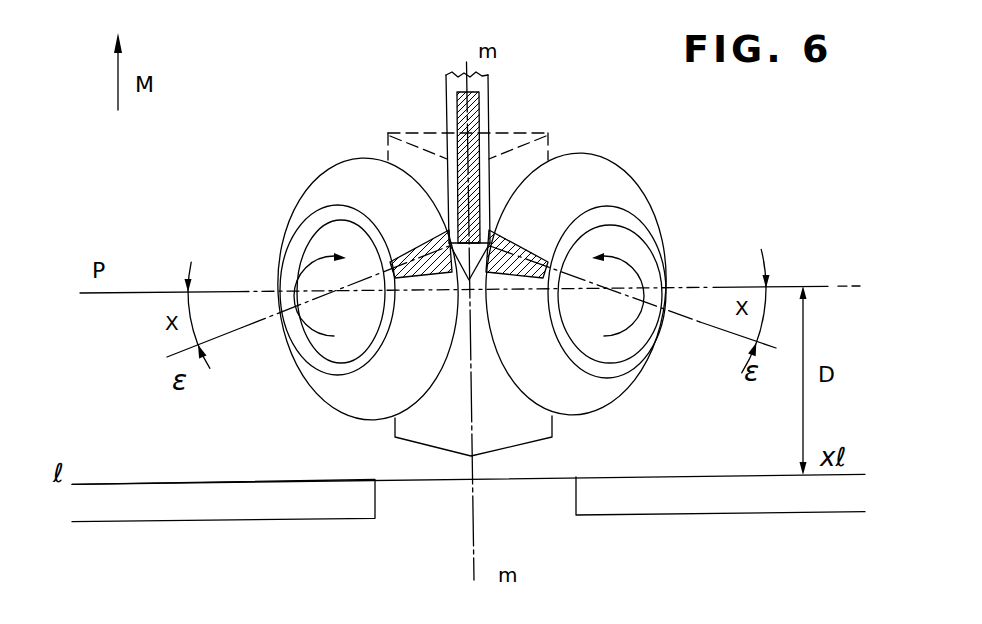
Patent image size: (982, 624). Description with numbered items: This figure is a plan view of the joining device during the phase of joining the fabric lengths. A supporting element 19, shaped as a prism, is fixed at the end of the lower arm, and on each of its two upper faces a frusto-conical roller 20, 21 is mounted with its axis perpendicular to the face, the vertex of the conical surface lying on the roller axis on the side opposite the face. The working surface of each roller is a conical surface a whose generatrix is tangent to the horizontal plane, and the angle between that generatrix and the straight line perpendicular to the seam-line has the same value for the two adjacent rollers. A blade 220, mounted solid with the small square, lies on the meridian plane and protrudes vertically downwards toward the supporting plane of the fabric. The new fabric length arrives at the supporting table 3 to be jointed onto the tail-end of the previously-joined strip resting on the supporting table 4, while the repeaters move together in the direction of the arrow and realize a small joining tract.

The blade 220 is at (475, 122).
The frusto-conical roller 20 is at (613, 383).
The frusto-conical roller 21 is at (355, 392).
The supporting element 19 is at (527, 417).
The supporting table 3 is at (222, 498).
The supporting table 4 is at (643, 497).
The conical surface a is at (335, 177).